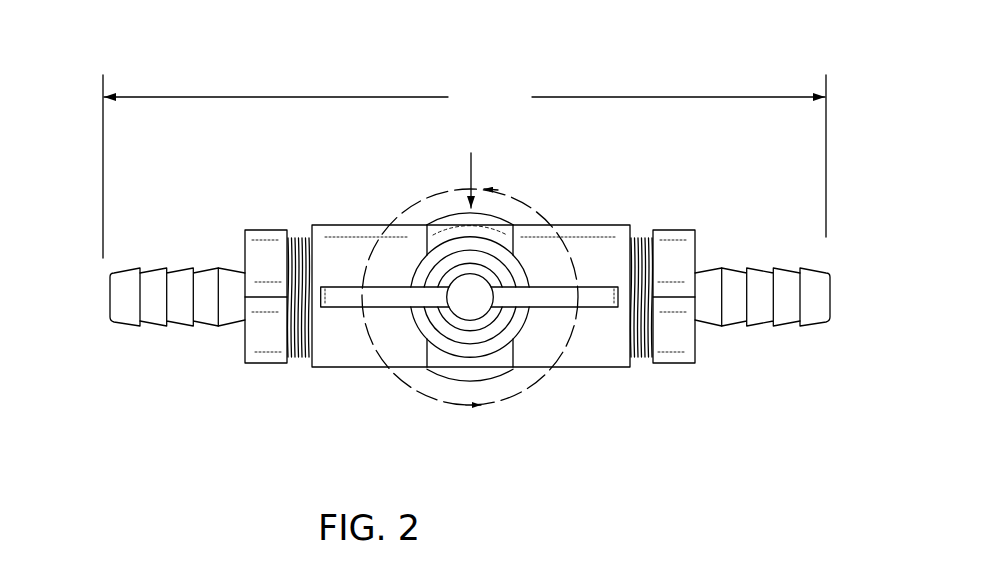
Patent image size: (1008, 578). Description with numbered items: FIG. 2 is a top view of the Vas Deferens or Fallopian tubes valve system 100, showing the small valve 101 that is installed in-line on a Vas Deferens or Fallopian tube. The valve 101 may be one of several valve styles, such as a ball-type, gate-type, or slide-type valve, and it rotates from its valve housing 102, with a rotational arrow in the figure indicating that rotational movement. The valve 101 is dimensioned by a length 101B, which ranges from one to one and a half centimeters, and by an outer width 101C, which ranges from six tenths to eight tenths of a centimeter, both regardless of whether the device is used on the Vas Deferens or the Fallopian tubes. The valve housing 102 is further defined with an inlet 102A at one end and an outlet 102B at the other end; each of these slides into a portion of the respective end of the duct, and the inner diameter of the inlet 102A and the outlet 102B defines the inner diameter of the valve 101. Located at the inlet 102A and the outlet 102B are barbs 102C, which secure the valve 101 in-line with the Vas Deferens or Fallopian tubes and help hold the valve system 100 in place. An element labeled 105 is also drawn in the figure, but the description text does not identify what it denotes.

The Vas Deferens or Fallopian tubes valve system 100 is at (214, 79).
The valve 101 is at (463, 283).
The length 101B is at (464, 166).
The outer width 101C is at (470, 383).
The valve housing 102 is at (352, 227).
The inlet 102A is at (102, 296).
The outlet 102B is at (838, 300).
The barbs 102C is at (805, 332).
The valve handle 105 is at (594, 300).